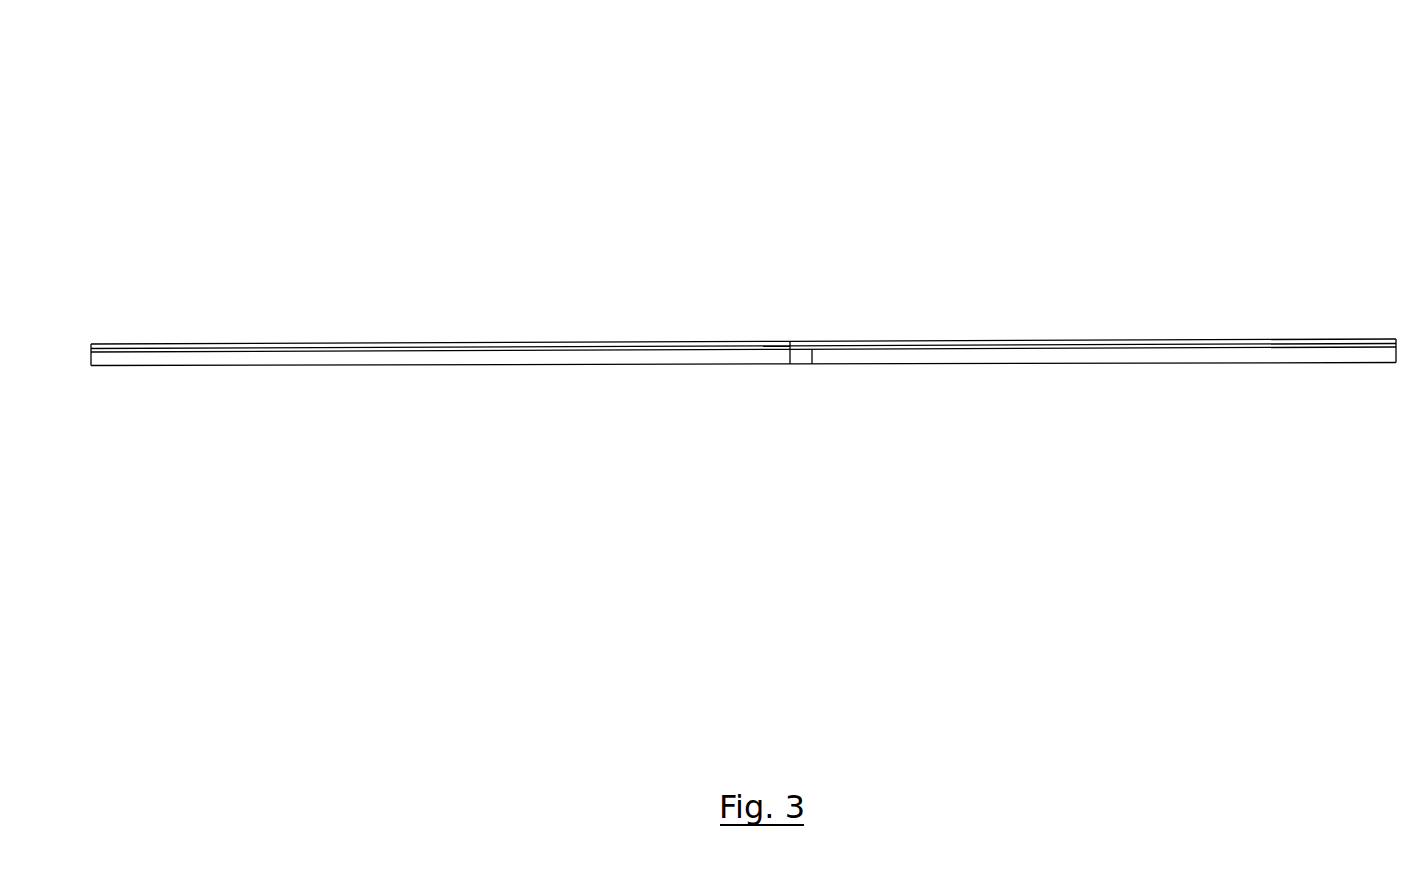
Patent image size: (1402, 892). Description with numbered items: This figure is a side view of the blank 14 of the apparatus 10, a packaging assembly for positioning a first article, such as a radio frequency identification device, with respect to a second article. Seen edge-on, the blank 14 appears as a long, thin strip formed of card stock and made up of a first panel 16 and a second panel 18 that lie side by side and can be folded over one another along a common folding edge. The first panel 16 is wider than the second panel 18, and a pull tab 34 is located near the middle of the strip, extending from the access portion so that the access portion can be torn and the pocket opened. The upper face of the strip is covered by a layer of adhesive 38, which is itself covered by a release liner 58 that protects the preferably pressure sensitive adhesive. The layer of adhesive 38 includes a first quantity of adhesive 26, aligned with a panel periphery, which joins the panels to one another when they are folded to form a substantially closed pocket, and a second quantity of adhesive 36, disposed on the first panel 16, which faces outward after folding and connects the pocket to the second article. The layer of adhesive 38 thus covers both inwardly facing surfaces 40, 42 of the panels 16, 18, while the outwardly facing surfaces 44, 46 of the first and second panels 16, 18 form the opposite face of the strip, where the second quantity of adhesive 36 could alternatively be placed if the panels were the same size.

The apparatus 10 is at (1141, 174).
The blank 14 is at (585, 440).
The first panel 16 is at (104, 363).
The second panel 18 is at (1347, 357).
The first quantity of adhesive 26 is at (465, 345).
The pull tab 34 is at (810, 356).
The second quantity of adhesive 36 is at (136, 344).
The layer of adhesive 38 is at (278, 350).
The inwardly facing surface 40 is at (337, 352).
The inwardly facing surface 42 is at (1092, 350).
The outwardly facing surface 44 is at (425, 367).
The outwardly facing surface 46 is at (1203, 363).
The release liner 58 is at (1256, 341).